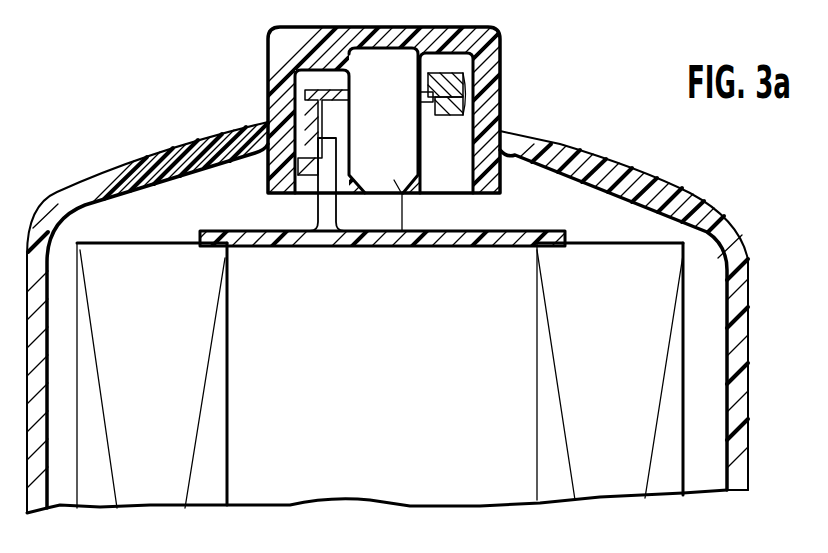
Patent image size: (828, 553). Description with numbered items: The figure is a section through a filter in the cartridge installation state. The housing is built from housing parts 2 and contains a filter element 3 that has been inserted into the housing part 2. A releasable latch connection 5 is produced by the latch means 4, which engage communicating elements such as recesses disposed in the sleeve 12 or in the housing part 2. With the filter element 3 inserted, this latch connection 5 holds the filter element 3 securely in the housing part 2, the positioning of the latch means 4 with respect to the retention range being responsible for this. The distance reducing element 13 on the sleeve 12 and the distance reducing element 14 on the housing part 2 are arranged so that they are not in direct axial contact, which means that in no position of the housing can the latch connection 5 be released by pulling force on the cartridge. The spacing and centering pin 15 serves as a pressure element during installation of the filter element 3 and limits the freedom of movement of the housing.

The housing part 2 is at (104, 180).
The filter element 3 is at (210, 443).
The latch means 4 is at (310, 163).
The latch connection 5 is at (270, 176).
The sleeve 12 is at (470, 104).
The distance reducing element 13 is at (470, 76).
The distance reducing element 14 is at (278, 47).
The spacing and centering pin 15 is at (397, 248).